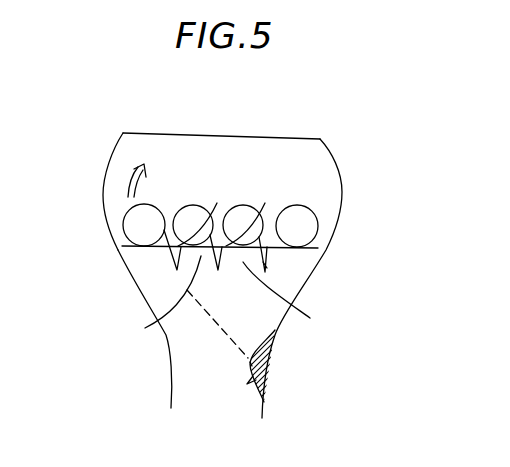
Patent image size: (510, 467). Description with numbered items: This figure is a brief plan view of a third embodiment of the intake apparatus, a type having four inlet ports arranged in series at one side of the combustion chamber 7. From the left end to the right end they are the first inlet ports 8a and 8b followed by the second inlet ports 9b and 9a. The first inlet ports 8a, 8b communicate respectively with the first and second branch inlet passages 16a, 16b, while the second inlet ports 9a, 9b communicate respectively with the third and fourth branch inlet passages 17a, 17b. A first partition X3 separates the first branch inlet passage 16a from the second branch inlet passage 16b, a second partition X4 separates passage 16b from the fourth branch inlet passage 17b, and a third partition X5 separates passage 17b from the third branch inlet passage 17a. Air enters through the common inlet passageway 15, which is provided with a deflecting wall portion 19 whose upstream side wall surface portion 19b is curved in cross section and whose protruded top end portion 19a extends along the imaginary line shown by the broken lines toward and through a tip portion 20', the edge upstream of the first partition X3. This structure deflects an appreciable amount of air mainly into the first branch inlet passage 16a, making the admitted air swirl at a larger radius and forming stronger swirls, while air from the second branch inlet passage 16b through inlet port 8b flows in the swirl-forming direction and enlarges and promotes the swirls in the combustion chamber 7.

The combustion chamber 7 is at (282, 146).
The first inlet port 8a is at (132, 220).
The first inlet port 8b is at (190, 208).
The second inlet port 9a is at (307, 223).
The second inlet port 9b is at (252, 253).
The first partition X3 is at (206, 215).
The second partition X4 is at (253, 215).
The third partition X5 is at (268, 265).
The common inlet passageway 15 is at (192, 370).
The first branch inlet passage 16a is at (143, 258).
The second branch inlet passage 16b is at (178, 307).
The third branch inlet passage 17a is at (268, 253).
The fourth branch inlet passage 17b is at (295, 298).
The deflecting wall portion 19 is at (268, 353).
The protruded top end portion 19a is at (250, 362).
The upstream side wall surface portion 19b is at (250, 383).
The tip portion 20' is at (135, 270).